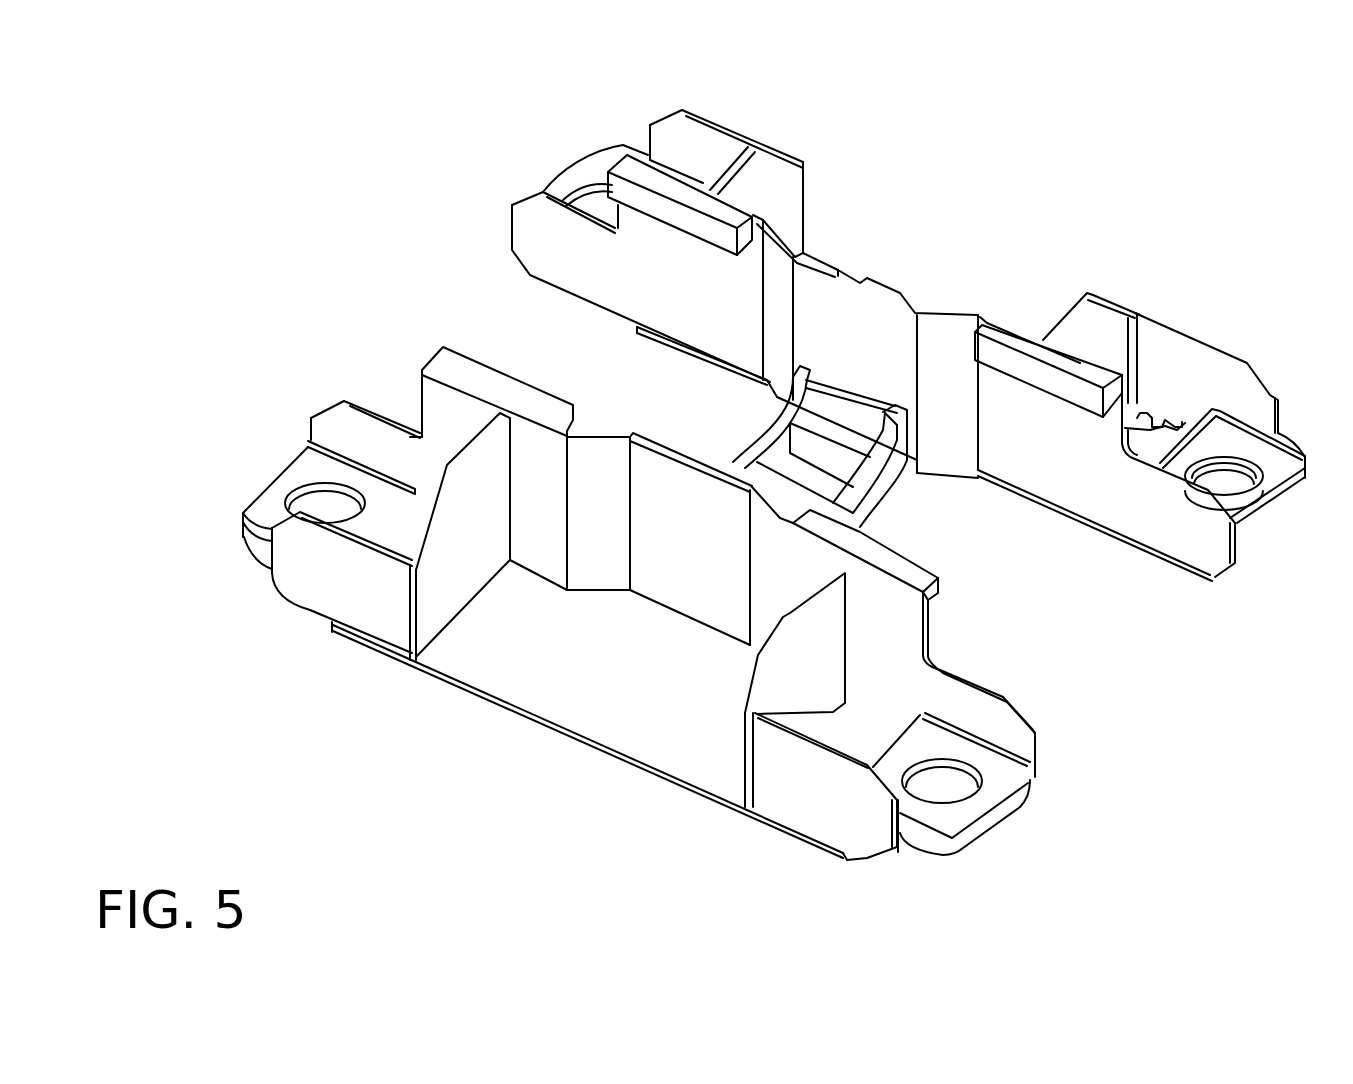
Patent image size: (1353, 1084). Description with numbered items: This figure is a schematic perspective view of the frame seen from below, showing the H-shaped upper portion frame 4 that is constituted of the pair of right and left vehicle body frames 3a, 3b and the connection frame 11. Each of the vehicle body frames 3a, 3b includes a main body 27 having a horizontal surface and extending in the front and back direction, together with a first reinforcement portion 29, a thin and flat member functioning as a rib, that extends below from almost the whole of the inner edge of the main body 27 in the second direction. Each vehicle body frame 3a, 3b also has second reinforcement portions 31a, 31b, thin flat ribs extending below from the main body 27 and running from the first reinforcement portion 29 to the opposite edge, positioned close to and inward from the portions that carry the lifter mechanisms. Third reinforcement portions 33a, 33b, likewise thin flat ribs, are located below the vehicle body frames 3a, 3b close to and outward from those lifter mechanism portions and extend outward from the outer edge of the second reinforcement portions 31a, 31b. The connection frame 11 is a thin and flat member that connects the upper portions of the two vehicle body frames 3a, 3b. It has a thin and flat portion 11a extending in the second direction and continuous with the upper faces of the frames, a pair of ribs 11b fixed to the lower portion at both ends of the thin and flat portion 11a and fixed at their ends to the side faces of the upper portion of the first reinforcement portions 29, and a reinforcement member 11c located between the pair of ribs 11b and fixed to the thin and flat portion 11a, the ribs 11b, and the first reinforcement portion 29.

The upper portion frame 4 is at (950, 155).
The vehicle body frame 3a is at (450, 707).
The vehicle body frame 3b is at (960, 247).
The main body 27 is at (547, 697).
The first reinforcement portion 29 is at (883, 343).
The second reinforcement portion 31a is at (770, 185).
The second reinforcement portion 31b is at (1107, 327).
The third reinforcement portion 33a is at (692, 138).
The third reinforcement portion 33b is at (1193, 350).
The connection frame 11 is at (903, 497).
The thin and flat portion 11a is at (895, 527).
The ribs 11b is at (760, 437).
The reinforcement member 11c is at (847, 423).